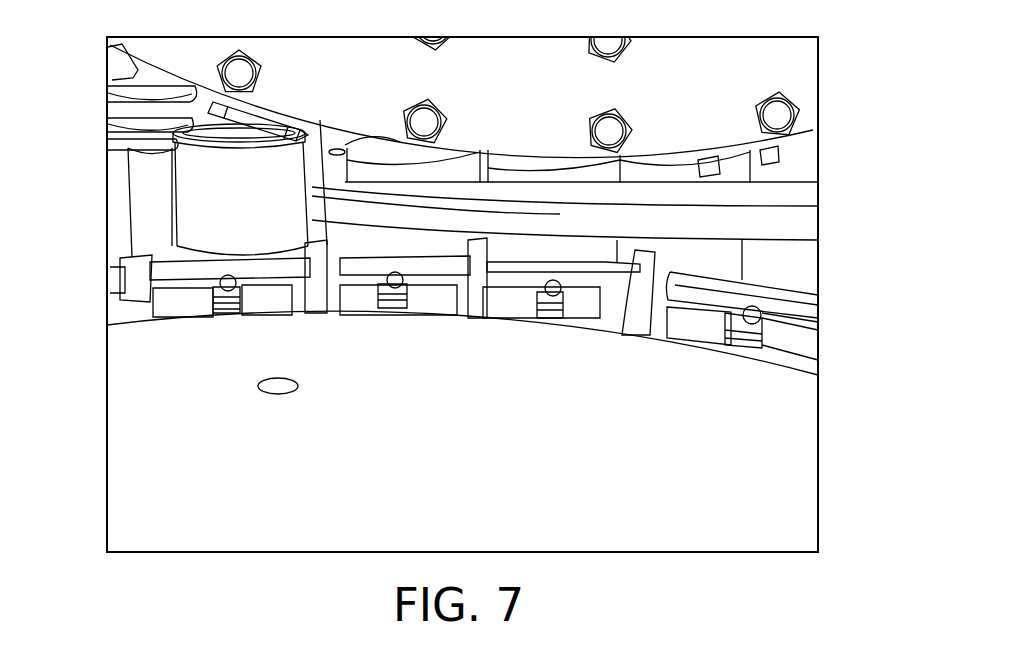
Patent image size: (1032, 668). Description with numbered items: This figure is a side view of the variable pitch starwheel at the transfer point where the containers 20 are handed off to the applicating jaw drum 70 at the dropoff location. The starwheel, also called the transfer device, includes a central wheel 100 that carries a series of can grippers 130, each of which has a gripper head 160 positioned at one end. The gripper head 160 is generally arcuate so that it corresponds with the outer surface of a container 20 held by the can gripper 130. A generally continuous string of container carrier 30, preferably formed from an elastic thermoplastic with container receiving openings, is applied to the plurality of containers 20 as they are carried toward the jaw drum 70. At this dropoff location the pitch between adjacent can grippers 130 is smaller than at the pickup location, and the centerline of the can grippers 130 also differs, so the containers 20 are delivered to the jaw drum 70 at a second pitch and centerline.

The container 20 is at (218, 189).
The container carrier 30 is at (108, 92).
The jaw drum 70 is at (765, 73).
The central wheel 100 is at (153, 453).
The can gripper 130 is at (797, 347).
The gripper head 160 is at (797, 322).